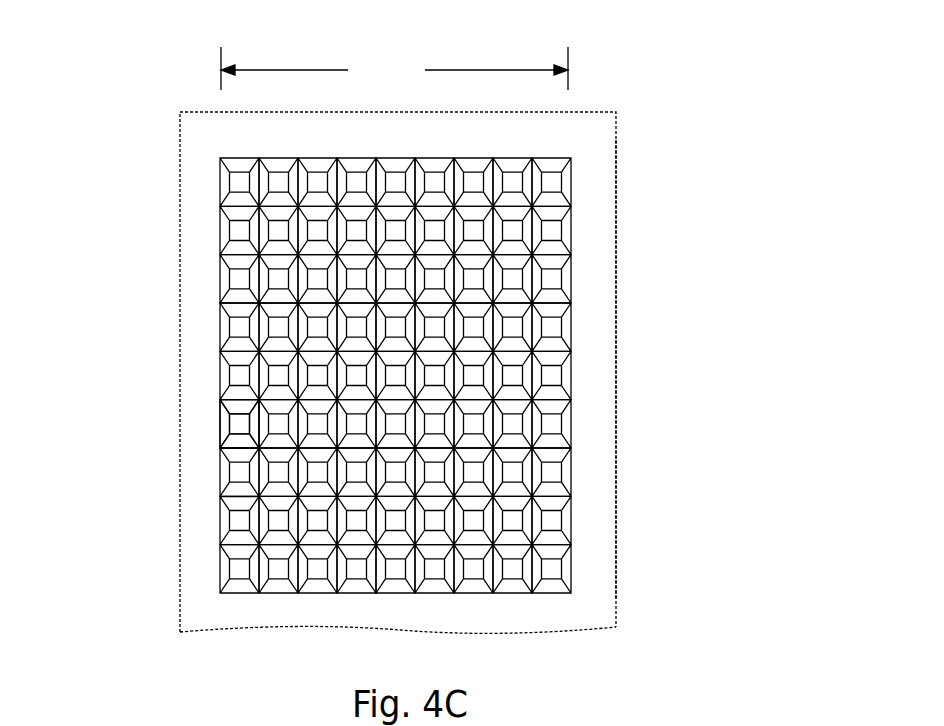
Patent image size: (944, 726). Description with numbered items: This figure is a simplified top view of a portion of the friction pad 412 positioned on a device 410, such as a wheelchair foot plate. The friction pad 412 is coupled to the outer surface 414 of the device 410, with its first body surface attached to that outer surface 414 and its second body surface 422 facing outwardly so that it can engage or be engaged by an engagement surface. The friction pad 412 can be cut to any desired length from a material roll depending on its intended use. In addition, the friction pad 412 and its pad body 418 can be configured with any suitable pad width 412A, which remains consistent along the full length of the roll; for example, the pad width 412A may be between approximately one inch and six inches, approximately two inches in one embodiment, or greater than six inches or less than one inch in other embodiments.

The device 410 is at (619, 253).
The friction pad 412 is at (218, 250).
The pad width 412A is at (394, 68).
The outer surface 414 is at (590, 436).
The pad body 418 is at (222, 497).
The second body surface 422 is at (237, 422).